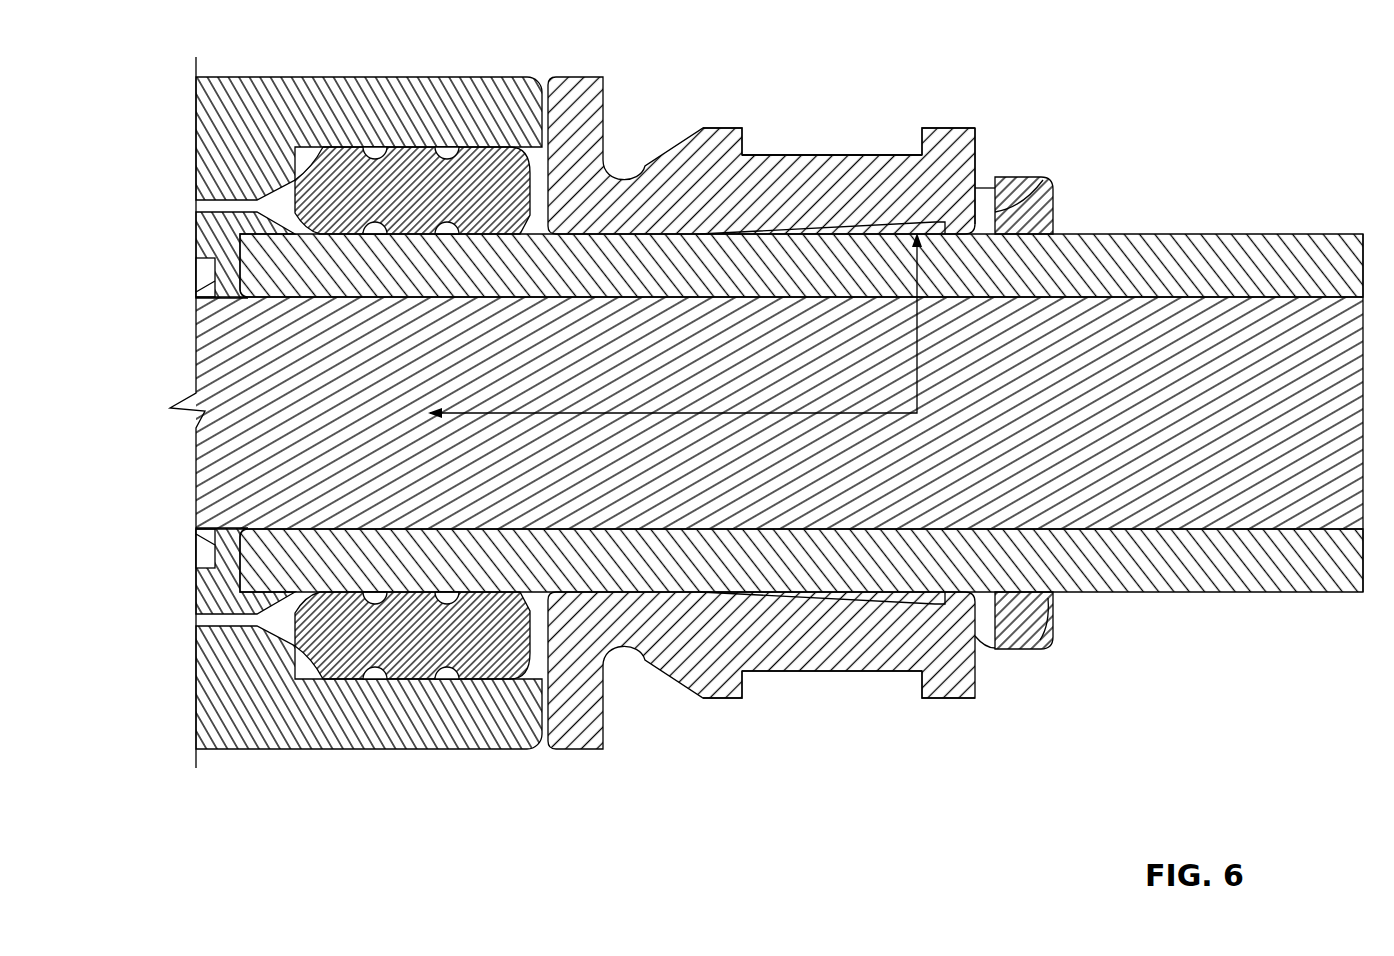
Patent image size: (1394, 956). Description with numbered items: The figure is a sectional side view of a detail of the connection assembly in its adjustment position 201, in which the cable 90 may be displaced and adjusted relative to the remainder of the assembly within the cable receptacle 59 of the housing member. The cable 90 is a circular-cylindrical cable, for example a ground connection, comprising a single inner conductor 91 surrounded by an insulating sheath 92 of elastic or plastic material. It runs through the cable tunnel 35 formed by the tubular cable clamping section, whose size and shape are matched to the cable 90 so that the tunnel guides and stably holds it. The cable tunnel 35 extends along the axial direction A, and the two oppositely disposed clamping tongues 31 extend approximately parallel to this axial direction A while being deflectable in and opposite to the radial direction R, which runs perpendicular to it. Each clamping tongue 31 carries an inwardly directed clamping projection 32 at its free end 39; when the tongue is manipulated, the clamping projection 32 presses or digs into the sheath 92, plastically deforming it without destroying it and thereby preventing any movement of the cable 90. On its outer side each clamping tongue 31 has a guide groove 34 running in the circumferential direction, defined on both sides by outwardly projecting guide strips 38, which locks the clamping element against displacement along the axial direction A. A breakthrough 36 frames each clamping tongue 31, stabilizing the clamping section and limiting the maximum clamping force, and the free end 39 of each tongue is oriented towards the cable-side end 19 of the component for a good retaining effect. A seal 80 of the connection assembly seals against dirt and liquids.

The cable receptacle 59 is at (270, 100).
The seal 80 is at (367, 190).
The clamping tongue 31 is at (703, 660).
The guide strip 38 is at (722, 128).
The guide groove 34 is at (820, 153).
The cable tunnel 35 is at (872, 628).
The adjustment position 201 is at (852, 108).
The clamping projection 32 is at (957, 228).
The free end 39 is at (977, 150).
The breakthrough 36 is at (1043, 176).
The end of component on the cable side 19 is at (1070, 202).
The cable 90 is at (1155, 580).
The inner conductor 91 is at (1270, 490).
The sheath 92 is at (1348, 580).
The axial direction A is at (713, 413).
The radial direction R is at (917, 325).